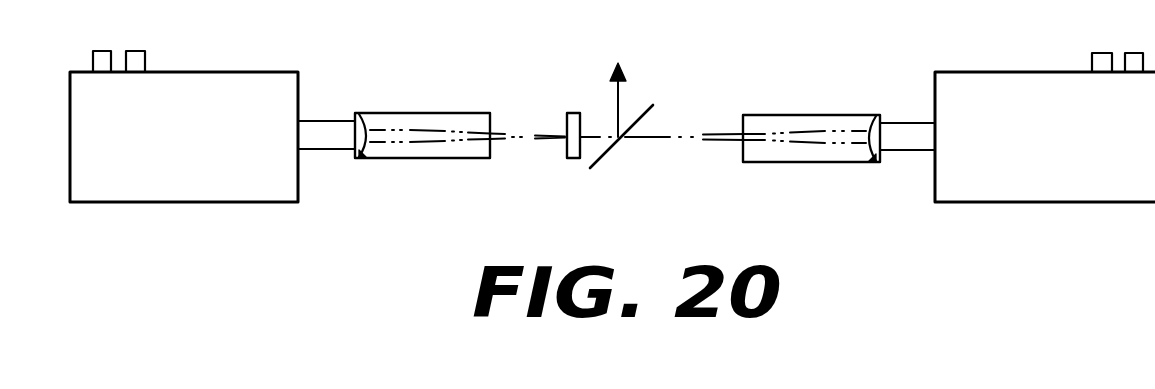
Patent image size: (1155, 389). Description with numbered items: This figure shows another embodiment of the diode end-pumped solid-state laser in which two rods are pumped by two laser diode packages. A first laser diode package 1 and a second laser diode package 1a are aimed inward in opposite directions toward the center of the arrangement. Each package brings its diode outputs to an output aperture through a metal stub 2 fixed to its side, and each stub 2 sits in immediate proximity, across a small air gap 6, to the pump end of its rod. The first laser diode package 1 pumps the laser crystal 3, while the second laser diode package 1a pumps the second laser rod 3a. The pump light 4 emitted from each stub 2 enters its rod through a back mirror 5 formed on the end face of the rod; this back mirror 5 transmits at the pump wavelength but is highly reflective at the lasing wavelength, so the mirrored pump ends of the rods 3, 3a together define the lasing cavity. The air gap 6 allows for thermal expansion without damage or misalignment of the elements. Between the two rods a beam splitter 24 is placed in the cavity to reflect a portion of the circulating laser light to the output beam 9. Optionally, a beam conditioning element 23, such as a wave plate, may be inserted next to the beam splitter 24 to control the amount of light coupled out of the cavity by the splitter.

The laser diode package 1 is at (1019, 72).
The second laser diode package 1a is at (228, 72).
The metal stub 2 is at (326, 121).
The laser crystal 3 is at (805, 115).
The second laser rod 3a is at (437, 113).
The pump light 4 is at (472, 143).
The back mirror 5 is at (361, 113).
The air gap 6 is at (547, 135).
The output beam 9 is at (620, 95).
The beam conditioning element 23 is at (573, 160).
The beam splitter 24 is at (605, 158).